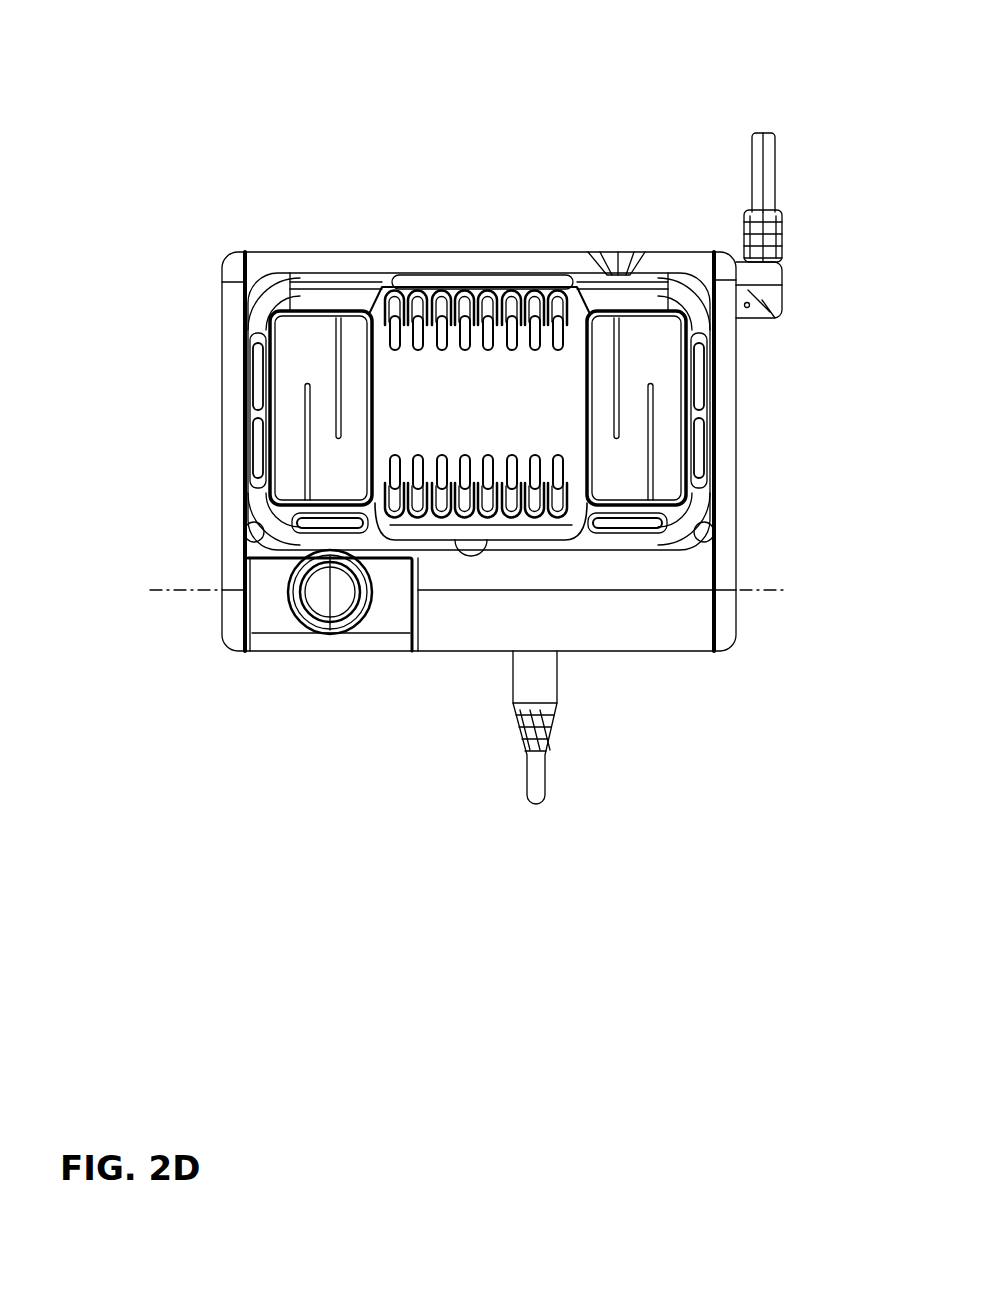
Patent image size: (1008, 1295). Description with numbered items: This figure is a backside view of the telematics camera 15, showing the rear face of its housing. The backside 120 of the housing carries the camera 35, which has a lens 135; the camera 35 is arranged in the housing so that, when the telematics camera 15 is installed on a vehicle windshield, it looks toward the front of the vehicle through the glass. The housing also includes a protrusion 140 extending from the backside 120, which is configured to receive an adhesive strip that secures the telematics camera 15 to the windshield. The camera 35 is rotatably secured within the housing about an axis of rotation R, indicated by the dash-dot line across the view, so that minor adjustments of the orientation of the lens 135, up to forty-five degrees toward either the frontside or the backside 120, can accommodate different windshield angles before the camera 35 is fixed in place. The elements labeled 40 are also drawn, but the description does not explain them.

The telematics camera 15 is at (501, 78).
The backside 120 is at (470, 250).
The protrusion 140 is at (293, 486).
The slots 40 is at (253, 374).
The camera 35 is at (270, 637).
The lens 135 is at (332, 627).